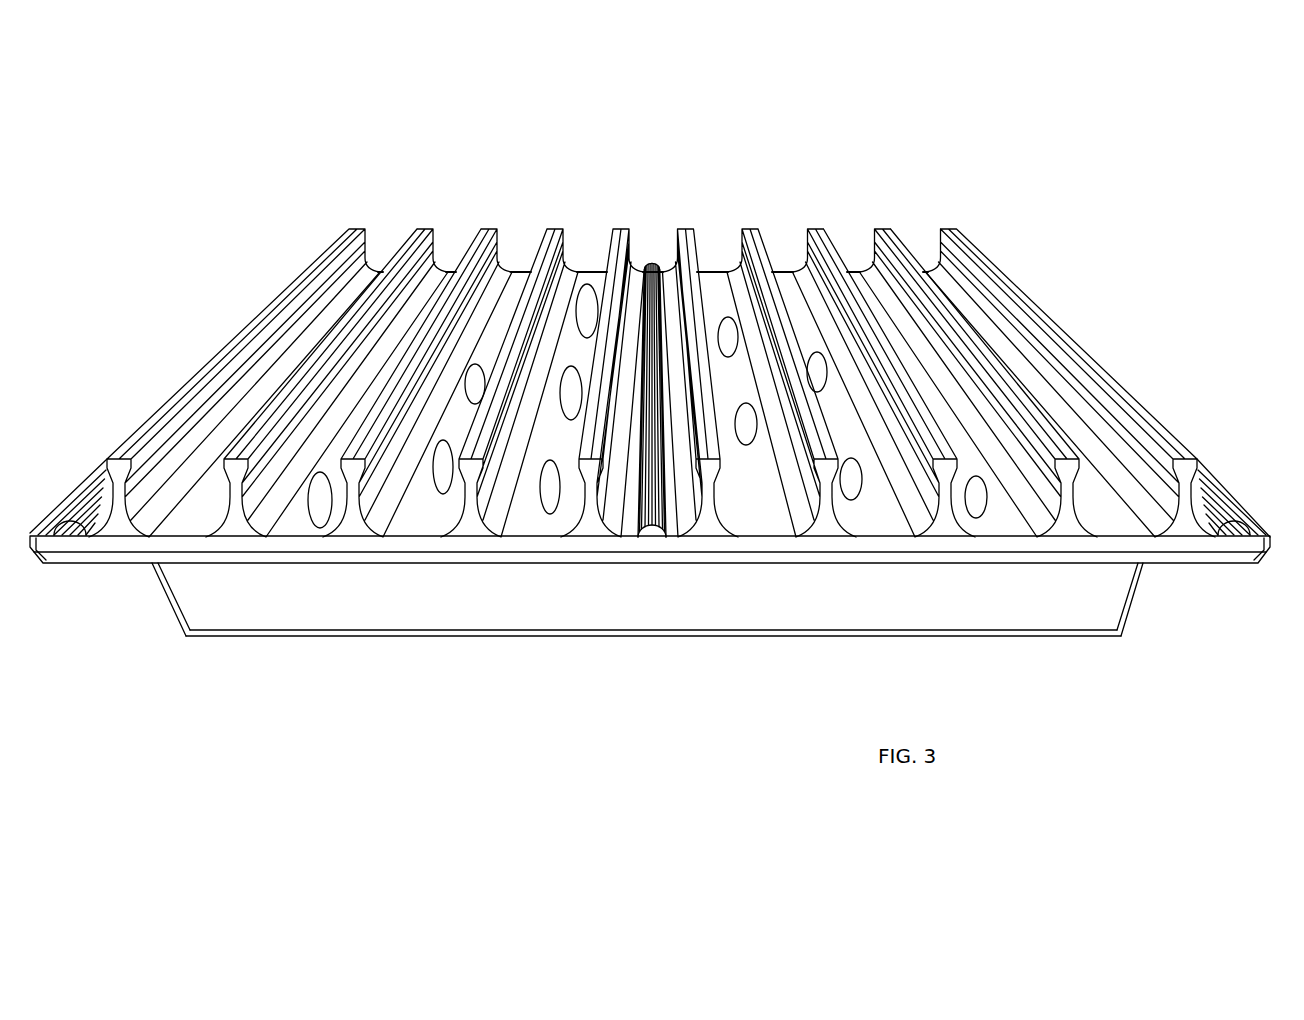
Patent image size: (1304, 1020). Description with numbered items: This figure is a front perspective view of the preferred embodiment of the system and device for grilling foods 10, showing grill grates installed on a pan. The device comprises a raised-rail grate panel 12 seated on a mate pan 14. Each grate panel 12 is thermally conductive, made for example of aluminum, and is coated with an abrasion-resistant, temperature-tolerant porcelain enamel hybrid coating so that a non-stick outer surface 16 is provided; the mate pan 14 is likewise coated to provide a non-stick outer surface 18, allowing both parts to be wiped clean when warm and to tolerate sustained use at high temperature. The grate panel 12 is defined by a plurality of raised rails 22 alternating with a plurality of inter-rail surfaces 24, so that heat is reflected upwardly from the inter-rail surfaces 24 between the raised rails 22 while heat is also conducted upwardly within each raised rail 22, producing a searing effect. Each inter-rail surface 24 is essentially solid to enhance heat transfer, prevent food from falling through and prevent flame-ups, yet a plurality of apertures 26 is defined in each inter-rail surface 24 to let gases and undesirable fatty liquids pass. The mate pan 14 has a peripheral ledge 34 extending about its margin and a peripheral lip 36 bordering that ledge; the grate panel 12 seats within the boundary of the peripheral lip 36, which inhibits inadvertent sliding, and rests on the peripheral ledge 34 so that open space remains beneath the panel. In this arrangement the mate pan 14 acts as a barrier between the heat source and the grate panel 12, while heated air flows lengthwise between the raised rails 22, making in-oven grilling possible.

The system and device for grilling foods 10 is at (935, 168).
The raised-rail grate panel 12 is at (1040, 333).
The mate pan 14 is at (877, 617).
The non-stick outer surface 16 is at (987, 277).
The non-stick outer surface 18 is at (718, 580).
The raised rail 22 is at (693, 273).
The inter-rail surface 24 is at (790, 297).
The aperture 26 is at (583, 320).
The peripheral ledge 34 is at (152, 562).
The peripheral lip 36 is at (62, 540).